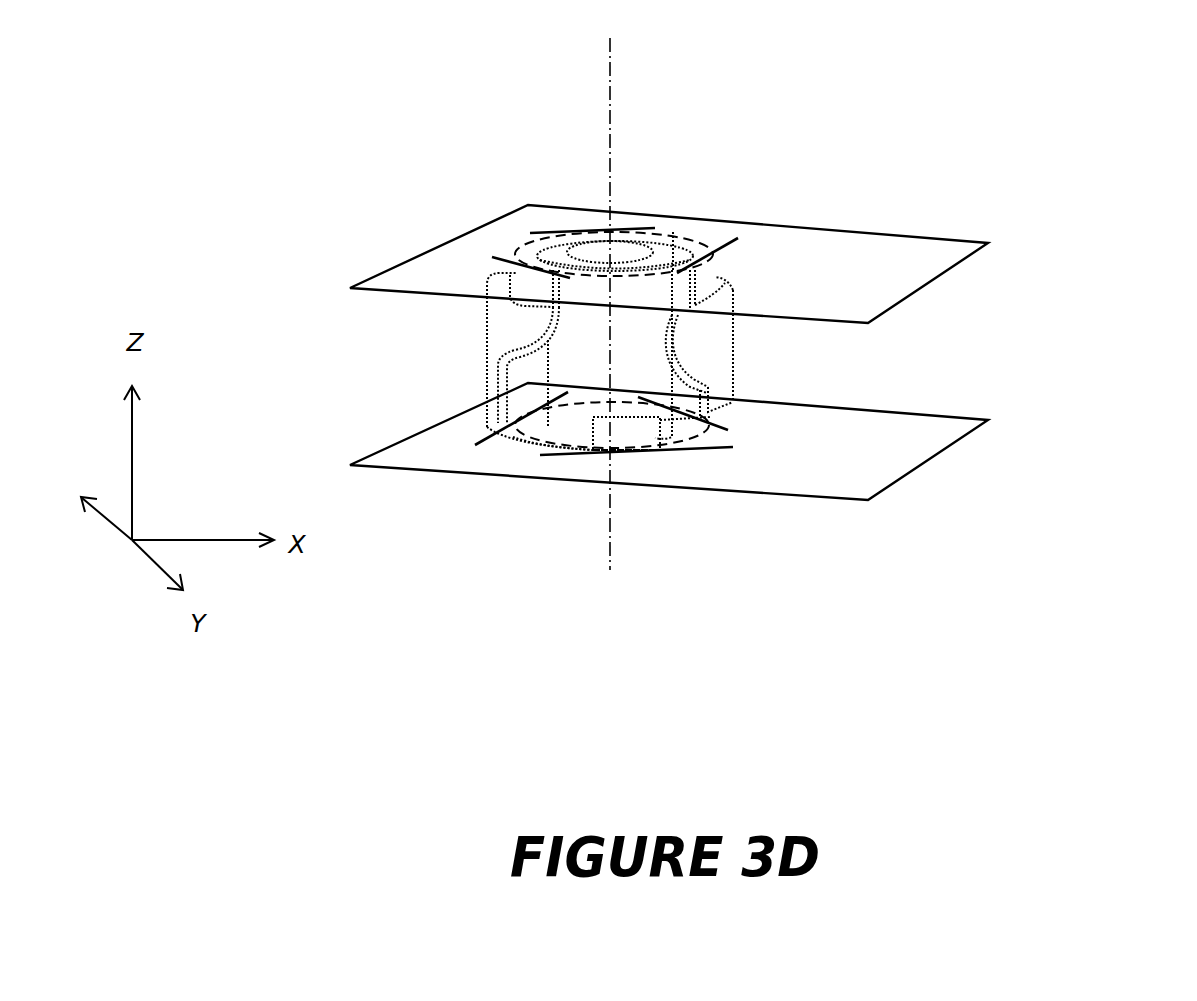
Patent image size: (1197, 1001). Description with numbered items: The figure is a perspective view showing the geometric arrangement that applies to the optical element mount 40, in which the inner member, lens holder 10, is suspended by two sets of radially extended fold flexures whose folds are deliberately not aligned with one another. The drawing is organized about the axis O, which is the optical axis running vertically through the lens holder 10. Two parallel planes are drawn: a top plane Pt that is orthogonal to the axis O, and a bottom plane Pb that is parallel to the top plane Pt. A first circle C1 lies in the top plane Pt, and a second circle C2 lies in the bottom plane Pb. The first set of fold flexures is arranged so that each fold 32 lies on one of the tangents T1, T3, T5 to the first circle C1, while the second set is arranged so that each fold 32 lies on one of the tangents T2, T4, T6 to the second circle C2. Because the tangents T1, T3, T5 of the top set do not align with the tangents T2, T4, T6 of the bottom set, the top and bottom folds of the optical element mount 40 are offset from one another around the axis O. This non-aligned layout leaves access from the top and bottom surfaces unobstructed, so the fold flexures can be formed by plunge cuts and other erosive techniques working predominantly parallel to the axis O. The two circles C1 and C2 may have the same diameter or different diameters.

The optical element mount 40 is at (1131, 61).
The axis O is at (610, 118).
The top plane Pt is at (867, 250).
The bottom plane Pb is at (950, 430).
The lens holder 10 is at (550, 362).
The fold 32 is at (518, 263).
The first circle C1 is at (677, 237).
The second circle C2 is at (698, 437).
The tangent T1 is at (500, 256).
The tangent T2 is at (558, 455).
The tangent T3 is at (723, 248).
The tangent T4 is at (727, 428).
The tangent T5 is at (545, 232).
The tangent T6 is at (477, 443).